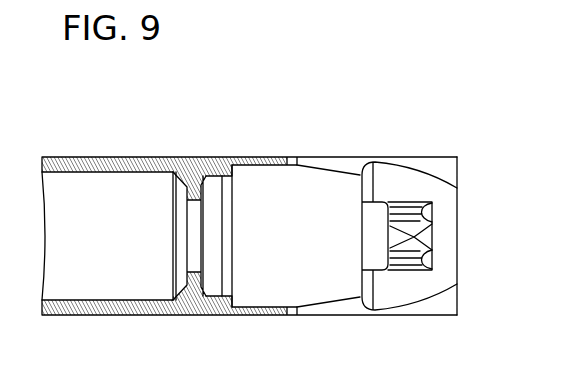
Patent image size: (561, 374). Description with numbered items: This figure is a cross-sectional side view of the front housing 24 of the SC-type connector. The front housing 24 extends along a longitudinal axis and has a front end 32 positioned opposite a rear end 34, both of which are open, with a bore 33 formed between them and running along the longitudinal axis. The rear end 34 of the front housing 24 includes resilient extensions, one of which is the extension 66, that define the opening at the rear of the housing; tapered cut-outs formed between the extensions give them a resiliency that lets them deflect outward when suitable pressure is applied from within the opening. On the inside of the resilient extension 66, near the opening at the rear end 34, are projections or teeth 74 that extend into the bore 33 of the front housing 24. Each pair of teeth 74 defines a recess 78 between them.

The front housing 24 is at (189, 165).
The front end 32 is at (41, 304).
The bore 33 is at (103, 200).
The rear end 34 is at (457, 170).
The extension 66 is at (410, 292).
The teeth 74 is at (408, 221).
The recess 78 is at (424, 238).